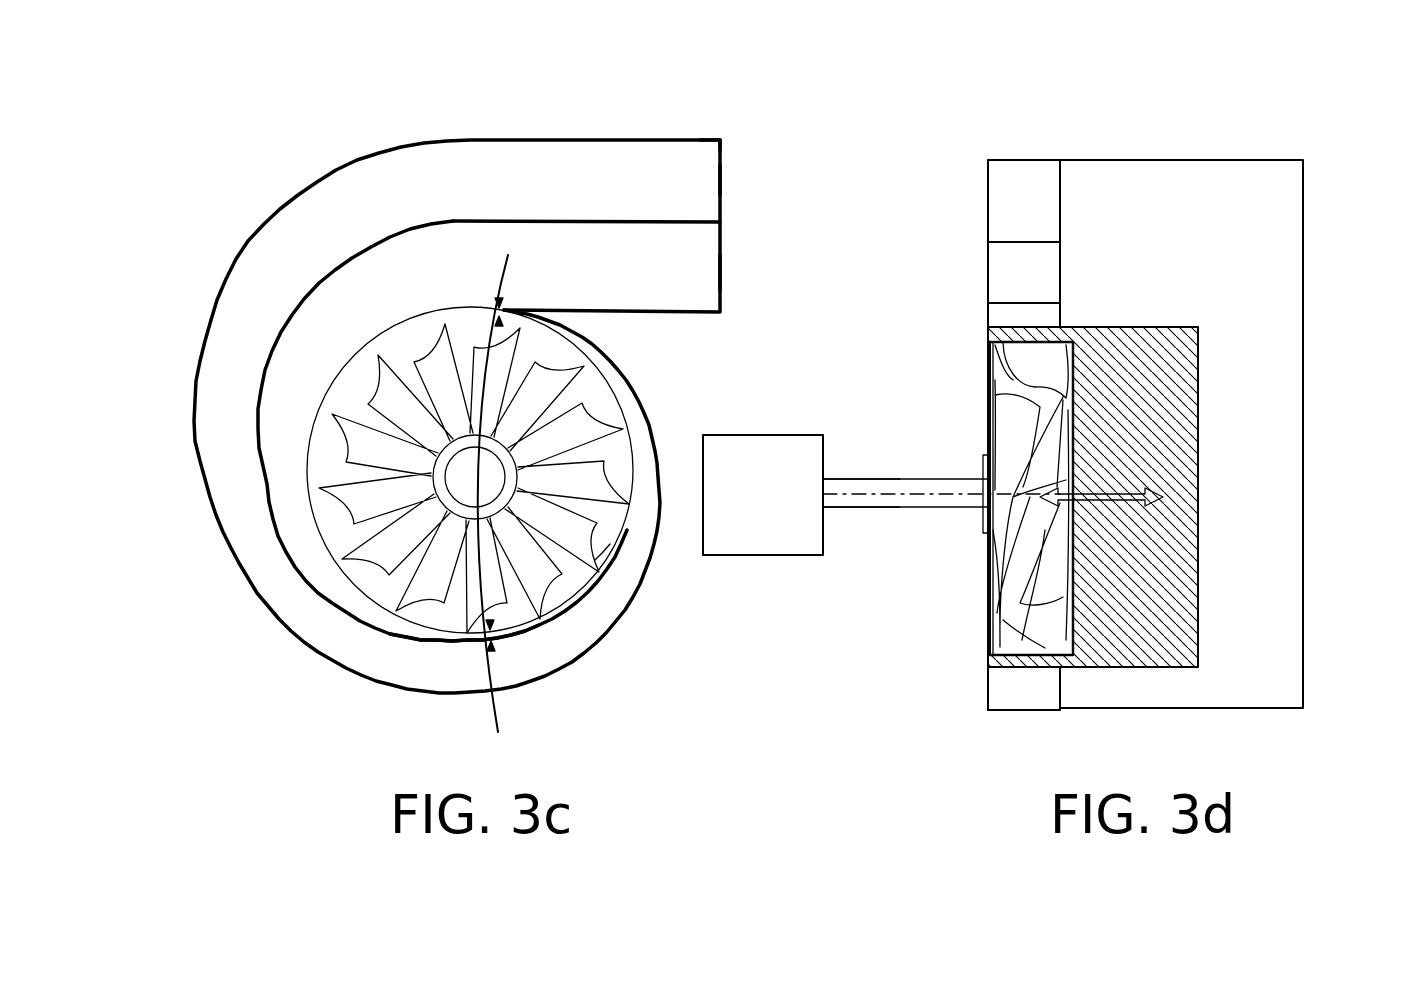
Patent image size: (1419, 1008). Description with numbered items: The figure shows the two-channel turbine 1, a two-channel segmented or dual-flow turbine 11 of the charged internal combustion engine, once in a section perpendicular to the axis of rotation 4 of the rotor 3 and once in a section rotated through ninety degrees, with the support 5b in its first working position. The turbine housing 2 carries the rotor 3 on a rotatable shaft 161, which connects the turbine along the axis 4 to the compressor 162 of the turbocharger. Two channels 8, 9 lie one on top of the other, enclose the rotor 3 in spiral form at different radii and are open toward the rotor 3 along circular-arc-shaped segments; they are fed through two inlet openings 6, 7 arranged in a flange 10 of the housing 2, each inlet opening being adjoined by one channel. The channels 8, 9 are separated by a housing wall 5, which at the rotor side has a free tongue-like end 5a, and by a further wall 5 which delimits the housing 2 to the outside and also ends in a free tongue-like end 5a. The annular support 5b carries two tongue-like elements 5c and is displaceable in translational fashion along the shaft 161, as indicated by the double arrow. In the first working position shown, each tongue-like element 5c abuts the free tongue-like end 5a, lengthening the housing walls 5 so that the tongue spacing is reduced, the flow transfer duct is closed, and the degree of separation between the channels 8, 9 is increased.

In FIG. 3C, the two-channel turbine 1 is at (236, 839).
In FIG. 3D, the two-channel turbine 1 is at (1271, 95).
In FIG. 3C, the dual-flow turbine 11 is at (290, 803).
In FIG. 3D, the dual-flow turbine 11 is at (1228, 118).
In FIG. 3C, the turbine housing 2 is at (292, 204).
In FIG. 3D, the turbine housing 2 is at (1304, 245).
In FIG. 3C, the rotor 3 is at (470, 470).
In FIG. 3D, the rotor 3 is at (992, 418).
In FIG. 3C, the axis of rotation 4 is at (586, 559).
In FIG. 3D, the axis of rotation 4 is at (988, 508).
In FIG. 3C, the housing wall 5 is at (256, 466).
In FIG. 3D, the housing wall 5 is at (1007, 240).
In FIG. 3C, the free tongue-like end 5a is at (520, 312).
In FIG. 3D, the annular support 5b is at (1163, 340).
In FIG. 3C, the tongue-like element 5c is at (501, 310).
In FIG. 3D, the tongue-like element 5c is at (1040, 327).
In FIG. 3C, the inlet opening 6 is at (723, 274).
In FIG. 3C, the inlet opening 7 is at (723, 182).
In FIG. 3C, the channel 8 is at (612, 267).
In FIG. 3D, the channel 8 is at (942, 668).
In FIG. 3C, the channel 9 is at (586, 181).
In FIG. 3D, the channel 9 is at (1024, 446).
In FIG. 3C, the flange 10 is at (732, 142).
In FIG. 3D, the rotatable shaft 161 is at (850, 478).
In FIG. 3D, the compressor 162 is at (763, 495).